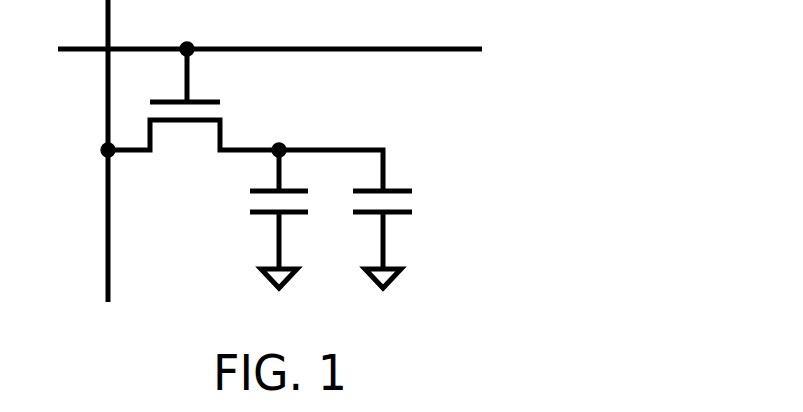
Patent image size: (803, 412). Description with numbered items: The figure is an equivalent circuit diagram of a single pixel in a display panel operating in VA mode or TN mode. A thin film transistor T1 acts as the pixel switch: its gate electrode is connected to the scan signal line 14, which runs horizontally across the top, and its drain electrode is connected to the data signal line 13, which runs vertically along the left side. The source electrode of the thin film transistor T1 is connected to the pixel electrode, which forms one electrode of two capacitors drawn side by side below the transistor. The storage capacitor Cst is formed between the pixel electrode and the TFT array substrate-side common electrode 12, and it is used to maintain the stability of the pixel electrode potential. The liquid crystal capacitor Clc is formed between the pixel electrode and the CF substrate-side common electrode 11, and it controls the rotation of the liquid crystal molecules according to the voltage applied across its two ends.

The scan signal line 14 is at (385, 45).
The data signal line 13 is at (110, 296).
The TFT array substrate-side common electrode 12 is at (284, 291).
The CF substrate-side common electrode 11 is at (388, 291).
The thin film transistor T1 is at (245, 120).
The storage capacitor Cst is at (255, 197).
The liquid crystal capacitor Clc is at (396, 221).